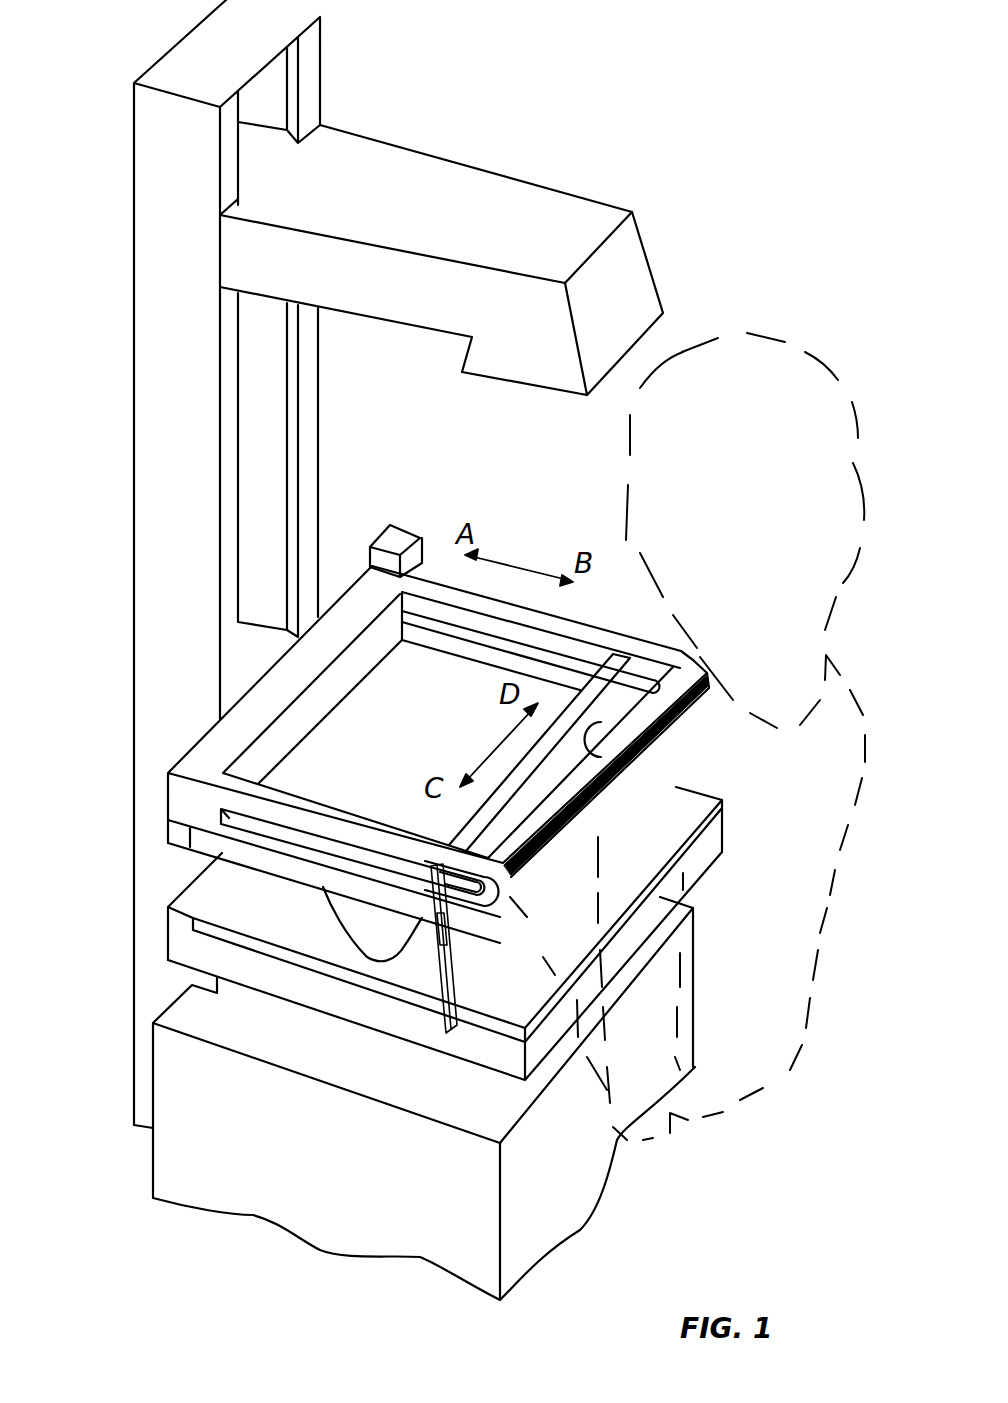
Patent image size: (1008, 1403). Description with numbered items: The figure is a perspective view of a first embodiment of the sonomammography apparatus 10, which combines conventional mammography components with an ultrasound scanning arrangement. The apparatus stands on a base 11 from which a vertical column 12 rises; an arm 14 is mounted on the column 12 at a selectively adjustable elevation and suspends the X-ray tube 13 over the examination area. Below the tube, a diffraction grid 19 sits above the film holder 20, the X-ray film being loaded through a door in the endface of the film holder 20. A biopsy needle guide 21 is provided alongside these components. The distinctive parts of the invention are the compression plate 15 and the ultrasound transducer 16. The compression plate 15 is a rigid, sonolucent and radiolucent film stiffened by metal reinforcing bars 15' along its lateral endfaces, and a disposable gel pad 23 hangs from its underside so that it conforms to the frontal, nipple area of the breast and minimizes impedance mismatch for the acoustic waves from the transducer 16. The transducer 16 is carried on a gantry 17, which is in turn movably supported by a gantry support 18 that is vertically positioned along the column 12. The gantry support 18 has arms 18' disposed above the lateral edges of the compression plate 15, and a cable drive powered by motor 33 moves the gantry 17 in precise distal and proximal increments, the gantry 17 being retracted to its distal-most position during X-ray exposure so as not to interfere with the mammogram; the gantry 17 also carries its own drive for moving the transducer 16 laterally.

The sonomammography apparatus 10 is at (660, 118).
The base 11 is at (353, 1177).
The vertical column 12 is at (152, 483).
The X-ray tube 13 is at (633, 258).
The arm 14 is at (432, 168).
The compression plate 15 is at (343, 712).
The metal reinforcing bars 15' is at (491, 936).
The ultrasound transducer 16 is at (603, 740).
The gantry 17 is at (537, 781).
The gantry support 18 is at (383, 754).
The arms 18' is at (440, 737).
The diffraction grid 19 is at (230, 897).
The film holder 20 is at (337, 1007).
The biopsy needle guide 21 is at (450, 1027).
The gel pad 23 is at (337, 928).
The motor 33 is at (410, 530).